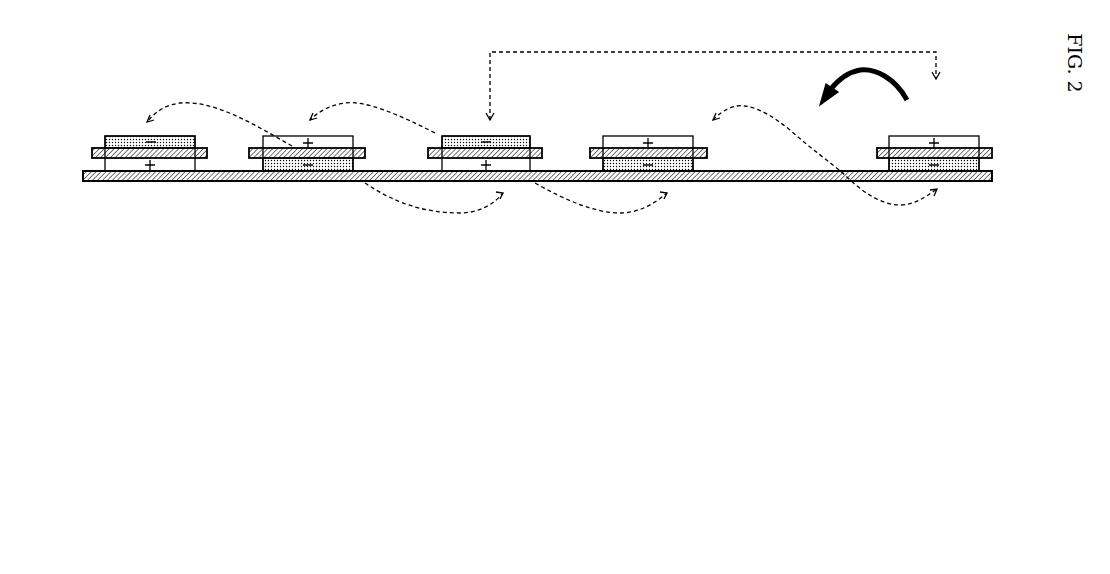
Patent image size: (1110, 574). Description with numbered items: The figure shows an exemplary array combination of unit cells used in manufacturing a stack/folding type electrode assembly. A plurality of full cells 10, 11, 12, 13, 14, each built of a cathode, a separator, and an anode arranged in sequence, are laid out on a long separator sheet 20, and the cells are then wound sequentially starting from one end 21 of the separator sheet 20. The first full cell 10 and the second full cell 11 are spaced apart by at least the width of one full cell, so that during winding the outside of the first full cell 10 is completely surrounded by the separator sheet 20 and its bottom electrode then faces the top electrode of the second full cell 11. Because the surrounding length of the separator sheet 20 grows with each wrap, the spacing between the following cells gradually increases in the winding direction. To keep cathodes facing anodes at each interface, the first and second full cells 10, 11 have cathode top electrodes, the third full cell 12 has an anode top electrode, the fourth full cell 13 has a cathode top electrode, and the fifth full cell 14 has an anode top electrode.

The first full cell 10 is at (950, 113).
The second full cell 11 is at (632, 135).
The third full cell 12 is at (475, 133).
The fourth full cell 13 is at (287, 135).
The fifth full cell 14 is at (133, 135).
The separator sheet 20 is at (233, 182).
The one end of the separator sheet 21 is at (992, 181).